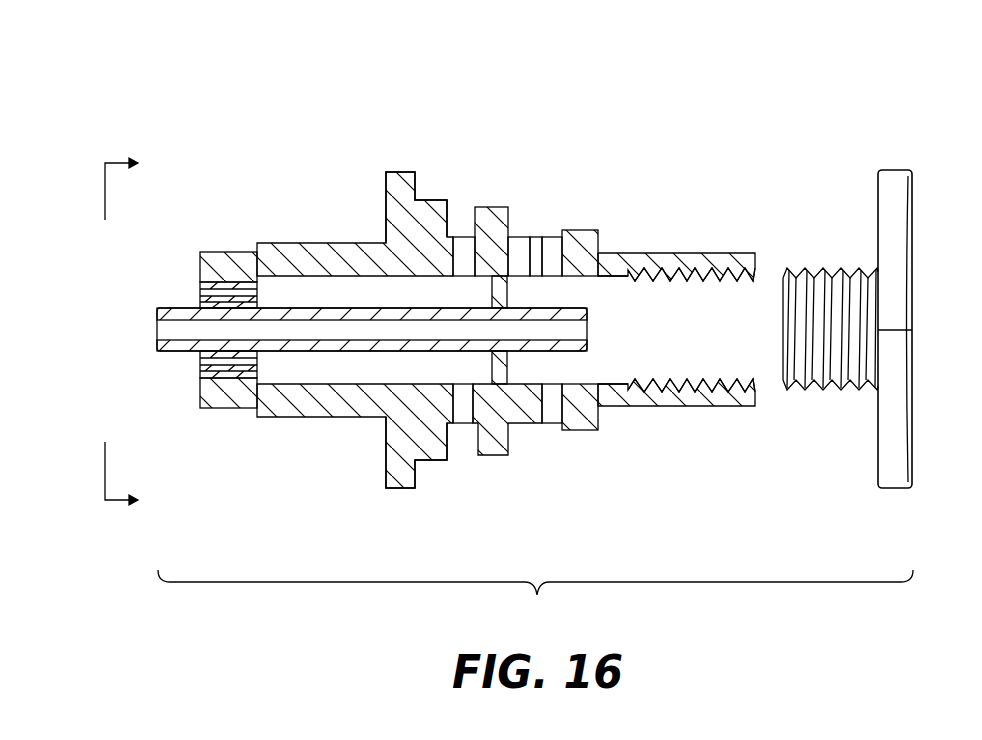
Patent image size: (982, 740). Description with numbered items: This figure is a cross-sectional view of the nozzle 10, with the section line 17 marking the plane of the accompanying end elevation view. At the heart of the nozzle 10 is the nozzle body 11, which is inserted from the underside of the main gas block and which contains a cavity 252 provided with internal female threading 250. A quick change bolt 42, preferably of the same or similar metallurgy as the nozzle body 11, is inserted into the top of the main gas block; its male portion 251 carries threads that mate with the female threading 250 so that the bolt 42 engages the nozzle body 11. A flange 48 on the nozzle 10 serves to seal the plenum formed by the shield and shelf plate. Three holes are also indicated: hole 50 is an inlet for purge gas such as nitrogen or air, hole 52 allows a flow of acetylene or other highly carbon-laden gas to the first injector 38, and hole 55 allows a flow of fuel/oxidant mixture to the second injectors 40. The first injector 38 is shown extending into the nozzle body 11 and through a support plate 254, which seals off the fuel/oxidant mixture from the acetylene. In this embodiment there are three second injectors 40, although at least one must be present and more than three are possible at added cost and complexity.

The nozzle 10 is at (663, 68).
The nozzle body 11 is at (325, 243).
The section line for FIG. 17 is at (143, 335).
The first injector 38 is at (177, 308).
The second injectors 40 is at (202, 296).
The quick change bolt 42 is at (900, 170).
The flange 48 is at (387, 475).
The hole 50 is at (643, 407).
The hole 52 is at (552, 430).
The hole 55 is at (463, 455).
The internal female threading 250 is at (700, 282).
The male portion 251 is at (818, 270).
The cavity 252 is at (692, 340).
The support plate 254 is at (505, 296).